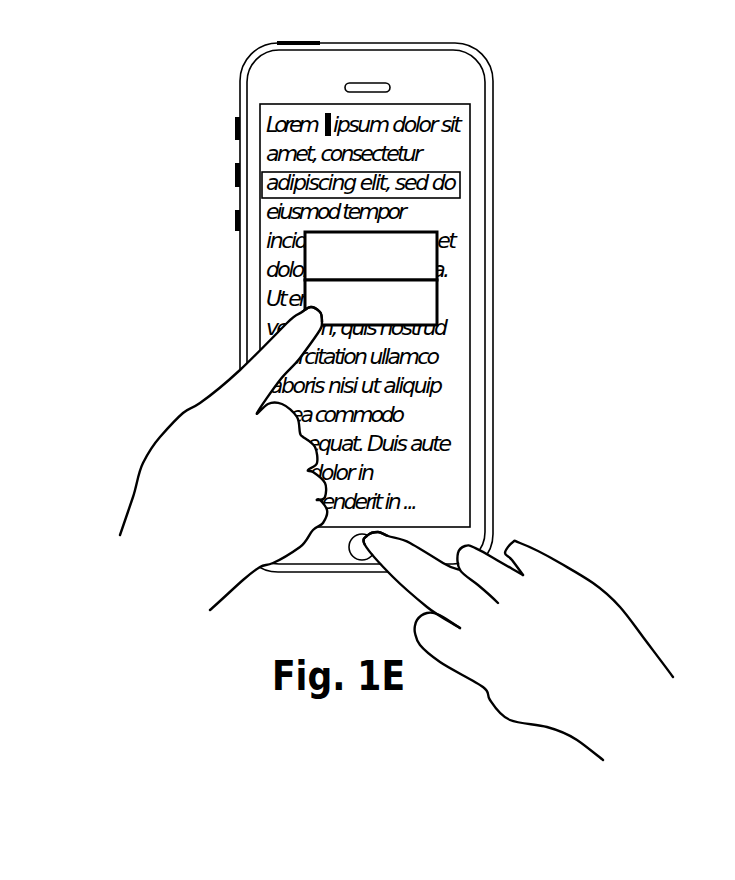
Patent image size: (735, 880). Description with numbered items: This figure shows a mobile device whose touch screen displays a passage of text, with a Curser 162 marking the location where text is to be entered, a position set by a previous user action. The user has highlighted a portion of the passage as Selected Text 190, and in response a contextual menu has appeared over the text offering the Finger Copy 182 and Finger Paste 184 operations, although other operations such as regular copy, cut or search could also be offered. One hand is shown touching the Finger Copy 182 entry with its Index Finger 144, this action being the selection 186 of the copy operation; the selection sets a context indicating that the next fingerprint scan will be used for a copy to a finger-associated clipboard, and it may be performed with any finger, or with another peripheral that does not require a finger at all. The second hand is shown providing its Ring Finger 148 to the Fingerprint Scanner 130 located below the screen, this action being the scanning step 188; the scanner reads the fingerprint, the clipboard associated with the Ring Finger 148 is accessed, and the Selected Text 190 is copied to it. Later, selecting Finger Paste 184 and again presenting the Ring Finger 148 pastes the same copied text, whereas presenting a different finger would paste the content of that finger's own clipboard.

The fingerprint scanner 130 is at (363, 567).
The index finger 144 is at (300, 313).
The ring finger 148 is at (400, 533).
The curser 162 is at (323, 113).
The finger copy operation 182 is at (437, 259).
The finger paste operation 184 is at (437, 305).
The selection of finger copy operation 186 is at (178, 423).
The providing ring finger to scanner 188 is at (623, 607).
The selected text 190 is at (461, 187).